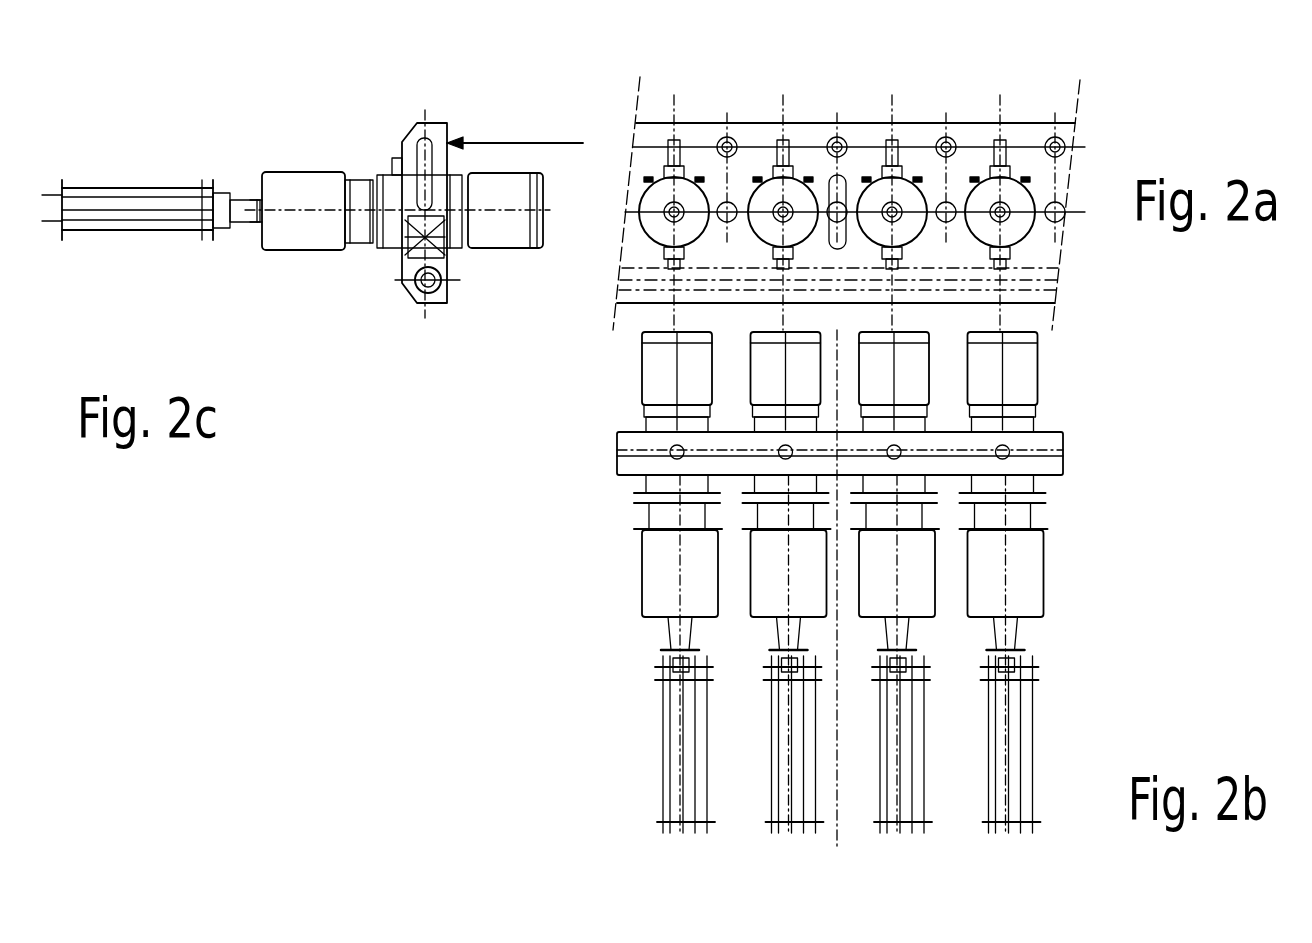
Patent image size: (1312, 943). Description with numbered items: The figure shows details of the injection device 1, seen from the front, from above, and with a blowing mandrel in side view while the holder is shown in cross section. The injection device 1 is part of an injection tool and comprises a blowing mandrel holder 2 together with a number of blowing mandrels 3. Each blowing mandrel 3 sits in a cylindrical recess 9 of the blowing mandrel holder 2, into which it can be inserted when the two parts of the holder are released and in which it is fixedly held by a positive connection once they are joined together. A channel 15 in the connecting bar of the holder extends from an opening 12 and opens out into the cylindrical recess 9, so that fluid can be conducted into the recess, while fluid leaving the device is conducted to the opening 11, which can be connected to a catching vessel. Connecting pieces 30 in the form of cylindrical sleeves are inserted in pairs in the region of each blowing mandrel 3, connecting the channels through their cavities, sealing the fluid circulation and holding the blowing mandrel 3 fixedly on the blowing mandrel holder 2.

In FIG. 2A, the injection device 1 is at (905, 88).
In FIG. 2B, the injection device 1 is at (548, 532).
In FIG. 2C, the injection device 1 is at (323, 290).
In FIG. 2A, the blowing mandrel holder 2 is at (1062, 259).
In FIG. 2B, the blowing mandrel holder 2 is at (1063, 465).
In FIG. 2C, the blowing mandrel holder 2 is at (433, 123).
In FIG. 2A, the blowing mandrel 3 is at (767, 197).
In FIG. 2B, the blowing mandrel 3 is at (1040, 380).
In FIG. 2C, the blowing mandrel 3 is at (270, 252).
In FIG. 2A, the cylindrical recess 9 is at (810, 187).
In FIG. 2C, the opening 11 is at (450, 295).
In FIG. 2C, the opening 12 is at (447, 127).
In FIG. 2A, the channel 15 is at (1008, 157).
In FIG. 2C, the channel 15 is at (395, 160).
In FIG. 2C, the connecting piece 30 is at (447, 257).